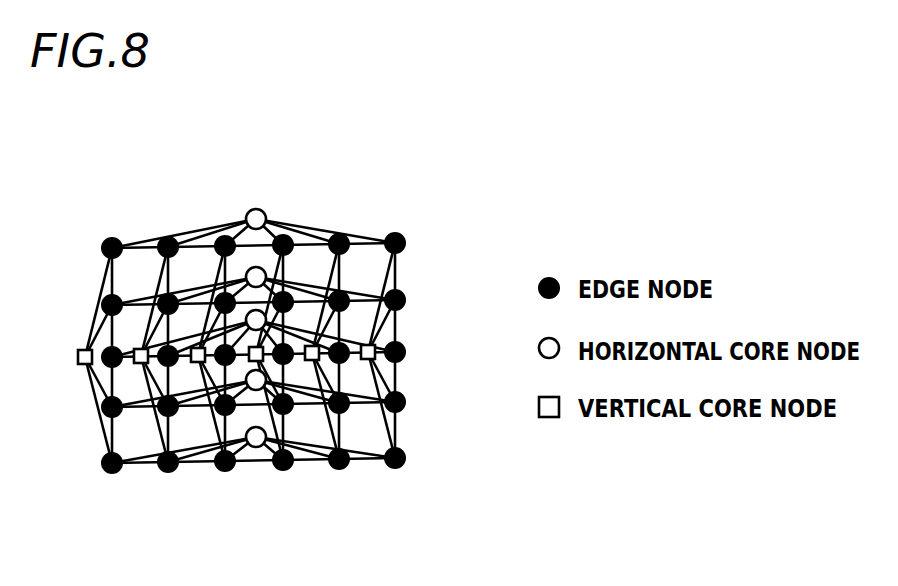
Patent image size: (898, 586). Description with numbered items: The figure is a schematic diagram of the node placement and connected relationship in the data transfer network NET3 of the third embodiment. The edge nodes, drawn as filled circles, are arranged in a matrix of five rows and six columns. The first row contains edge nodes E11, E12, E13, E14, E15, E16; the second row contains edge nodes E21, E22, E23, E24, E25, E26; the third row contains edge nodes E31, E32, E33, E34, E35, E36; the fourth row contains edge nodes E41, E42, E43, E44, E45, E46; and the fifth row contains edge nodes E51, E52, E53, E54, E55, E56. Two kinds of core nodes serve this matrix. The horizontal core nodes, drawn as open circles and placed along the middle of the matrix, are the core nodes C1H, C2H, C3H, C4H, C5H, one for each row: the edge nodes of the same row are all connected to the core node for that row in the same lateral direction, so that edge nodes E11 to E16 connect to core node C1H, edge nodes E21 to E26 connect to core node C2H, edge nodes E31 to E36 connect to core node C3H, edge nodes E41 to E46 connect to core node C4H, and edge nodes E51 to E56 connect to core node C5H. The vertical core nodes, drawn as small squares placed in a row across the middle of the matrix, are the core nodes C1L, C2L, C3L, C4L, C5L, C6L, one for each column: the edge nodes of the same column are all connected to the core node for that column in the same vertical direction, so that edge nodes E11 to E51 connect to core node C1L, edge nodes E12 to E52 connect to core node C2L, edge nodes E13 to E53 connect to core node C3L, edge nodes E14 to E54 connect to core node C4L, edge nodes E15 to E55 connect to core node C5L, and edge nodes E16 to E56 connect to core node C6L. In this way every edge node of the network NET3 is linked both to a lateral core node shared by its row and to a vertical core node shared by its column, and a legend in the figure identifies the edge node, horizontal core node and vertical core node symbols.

The data transfer network NET3 is at (597, 163).
The edge node E11 is at (101, 247).
The edge node E12 is at (168, 236).
The edge node E13 is at (225, 235).
The edge node E14 is at (290, 236).
The edge node E15 is at (345, 236).
The edge node E16 is at (406, 243).
The edge node E21 is at (101, 304).
The edge node E22 is at (168, 304).
The edge node E23 is at (225, 303).
The edge node E24 is at (283, 302).
The edge node E25 is at (339, 301).
The edge node E26 is at (406, 300).
The edge node E31 is at (97, 346).
The edge node E32 is at (168, 356).
The edge node E33 is at (225, 355).
The edge node E34 is at (283, 354).
The edge node E35 is at (339, 353).
The edge node E36 is at (406, 352).
The edge node E41 is at (101, 406).
The edge node E42 is at (168, 406).
The edge node E43 is at (225, 405).
The edge node E44 is at (283, 404).
The edge node E45 is at (339, 403).
The edge node E46 is at (406, 402).
The edge node E51 is at (101, 462).
The edge node E52 is at (168, 473).
The edge node E53 is at (225, 472).
The edge node E54 is at (288, 471).
The edge node E55 is at (345, 470).
The edge node E56 is at (406, 458).
The core node C1H is at (257, 208).
The core node C2H is at (256, 277).
The core node C3H is at (256, 320).
The core node C4H is at (256, 380).
The core node C5H is at (256, 448).
The core node C1L is at (77, 358).
The core node C2L is at (141, 356).
The core node C3L is at (198, 355).
The core node C4L is at (256, 354).
The core node C5L is at (312, 353).
The core node C6L is at (377, 354).